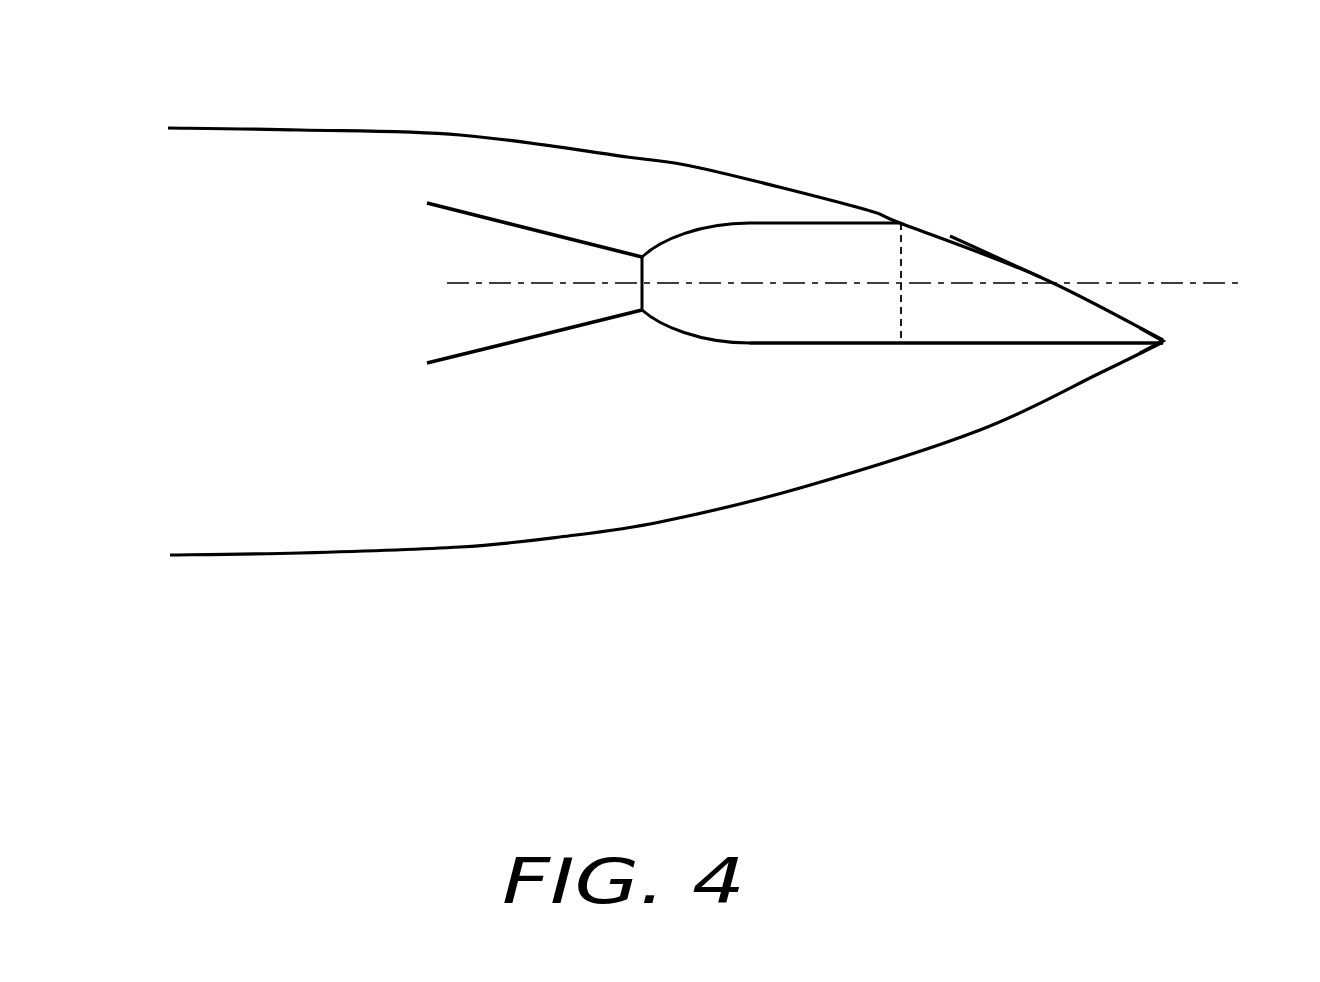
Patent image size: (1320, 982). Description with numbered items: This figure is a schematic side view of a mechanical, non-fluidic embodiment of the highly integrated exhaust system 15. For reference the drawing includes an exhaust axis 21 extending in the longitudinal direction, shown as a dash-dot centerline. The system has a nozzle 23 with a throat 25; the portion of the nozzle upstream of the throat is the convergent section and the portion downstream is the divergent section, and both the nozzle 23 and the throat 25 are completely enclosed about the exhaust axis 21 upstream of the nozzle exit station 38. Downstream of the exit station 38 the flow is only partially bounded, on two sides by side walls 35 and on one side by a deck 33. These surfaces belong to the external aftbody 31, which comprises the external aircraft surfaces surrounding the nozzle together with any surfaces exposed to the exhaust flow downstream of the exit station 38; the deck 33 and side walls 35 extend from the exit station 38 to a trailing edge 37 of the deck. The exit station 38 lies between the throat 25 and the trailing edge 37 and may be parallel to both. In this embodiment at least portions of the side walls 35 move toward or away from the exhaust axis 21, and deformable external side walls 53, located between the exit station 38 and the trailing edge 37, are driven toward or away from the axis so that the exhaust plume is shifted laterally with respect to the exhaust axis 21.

The highly integrated exhaust system 15 is at (1140, 103).
The exhaust axis 21 is at (1215, 282).
The nozzle 23 is at (843, 217).
The throat 25 is at (643, 290).
The external aftbody 31 is at (980, 432).
The deck 33 is at (988, 340).
The side walls 35 is at (963, 240).
The trailing edge 37 is at (1163, 343).
The nozzle exit station 38 is at (905, 247).
The deformable external side walls 53 is at (1038, 315).